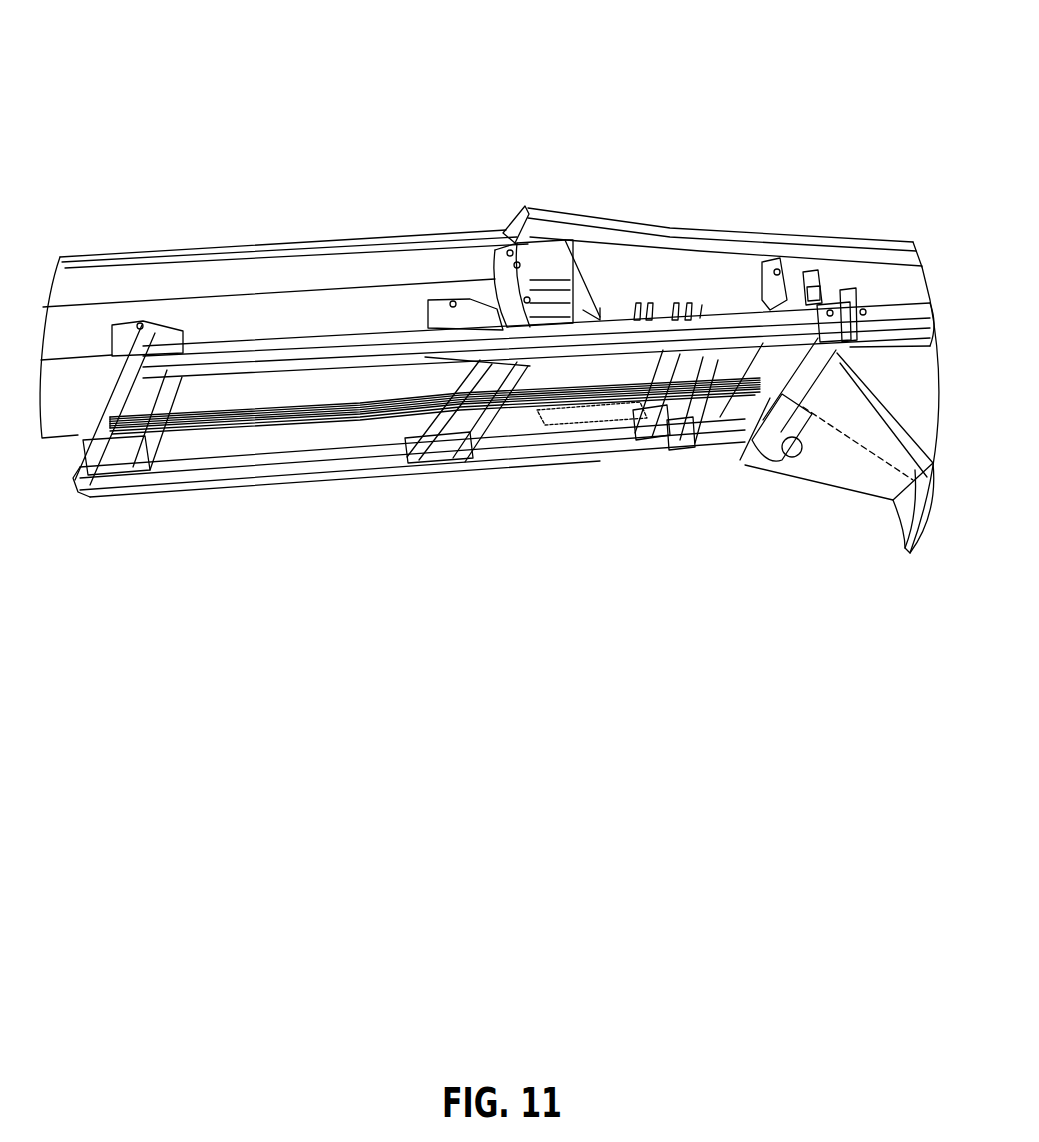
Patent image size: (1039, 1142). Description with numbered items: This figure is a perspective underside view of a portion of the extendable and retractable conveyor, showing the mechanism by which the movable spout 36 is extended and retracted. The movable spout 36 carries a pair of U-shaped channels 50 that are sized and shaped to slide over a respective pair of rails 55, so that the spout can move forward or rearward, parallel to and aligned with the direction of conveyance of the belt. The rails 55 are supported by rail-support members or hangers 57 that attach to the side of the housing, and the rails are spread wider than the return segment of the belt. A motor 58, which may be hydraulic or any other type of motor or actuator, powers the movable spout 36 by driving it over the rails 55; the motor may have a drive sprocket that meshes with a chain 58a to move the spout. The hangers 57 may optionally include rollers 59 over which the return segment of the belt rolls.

The movable spout 36 is at (857, 467).
The U-shaped channels 50 is at (920, 300).
The rails 55 is at (617, 333).
The rail-support members or hangers 57 is at (160, 338).
The motor 58 is at (787, 430).
The chain 58a is at (310, 420).
The rollers 59 is at (110, 402).